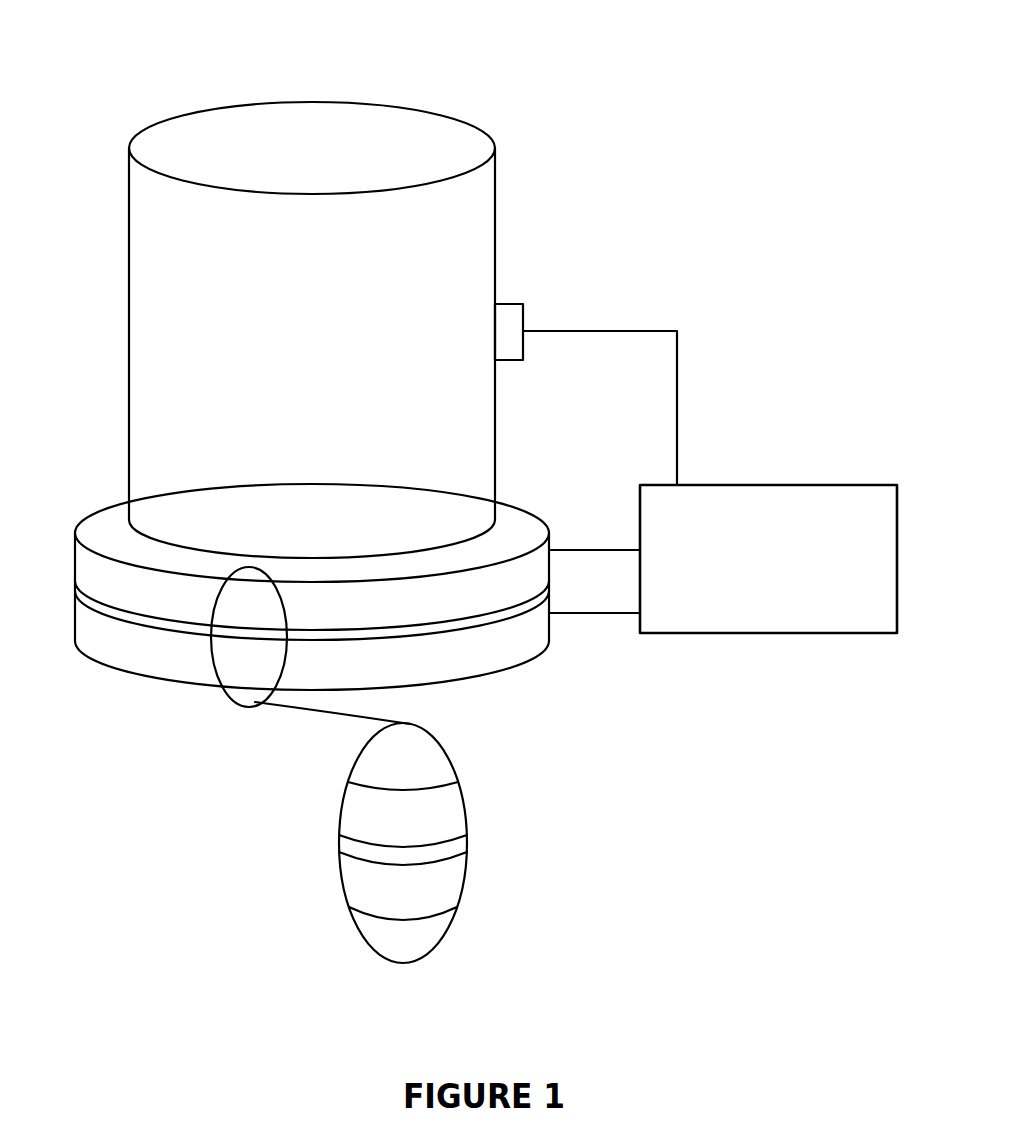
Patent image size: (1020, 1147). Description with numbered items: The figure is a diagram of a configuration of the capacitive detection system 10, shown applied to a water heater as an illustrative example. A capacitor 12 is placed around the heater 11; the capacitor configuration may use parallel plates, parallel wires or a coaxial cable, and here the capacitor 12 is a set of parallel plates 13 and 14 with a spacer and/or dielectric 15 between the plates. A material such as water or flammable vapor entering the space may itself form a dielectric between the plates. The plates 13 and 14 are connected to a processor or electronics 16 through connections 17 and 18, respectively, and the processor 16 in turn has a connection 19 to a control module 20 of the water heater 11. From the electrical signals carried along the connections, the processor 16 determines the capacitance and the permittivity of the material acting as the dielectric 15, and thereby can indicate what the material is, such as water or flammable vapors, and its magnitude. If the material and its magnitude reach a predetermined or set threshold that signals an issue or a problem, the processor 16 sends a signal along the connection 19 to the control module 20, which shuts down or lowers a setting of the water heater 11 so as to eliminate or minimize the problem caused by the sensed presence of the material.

The detection system 10 is at (728, 44).
The heater 11 is at (495, 152).
The capacitor 12 is at (75, 528).
The parallel plate 13 is at (445, 806).
The parallel plate 14 is at (445, 888).
The spacer and/or dielectric 15 is at (440, 848).
The processor or electronics 16 is at (750, 485).
The connection 17 is at (565, 550).
The connection 18 is at (565, 613).
The connection 19 is at (640, 331).
The control module 20 is at (513, 304).